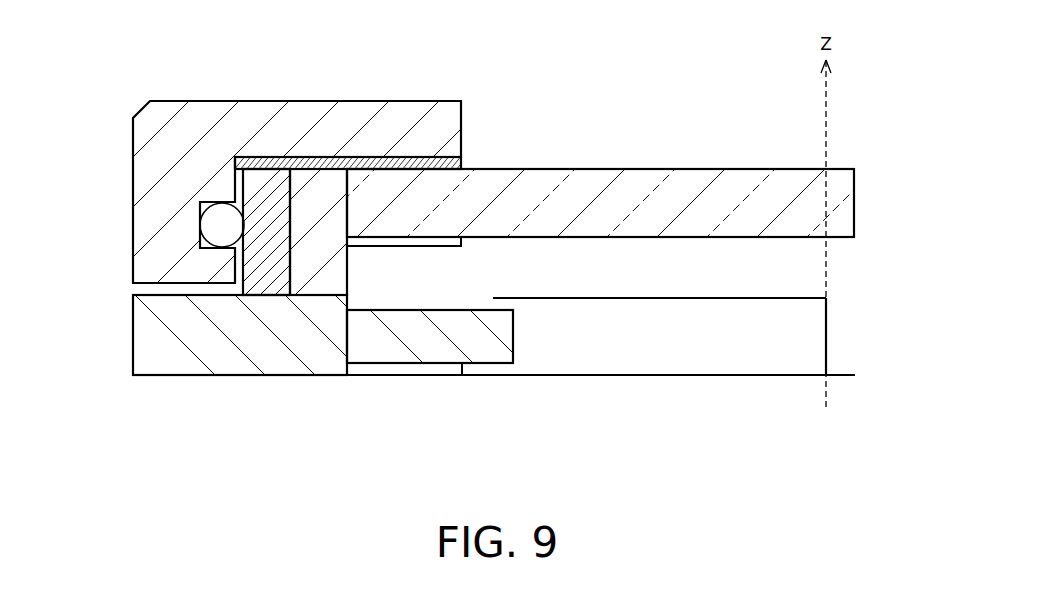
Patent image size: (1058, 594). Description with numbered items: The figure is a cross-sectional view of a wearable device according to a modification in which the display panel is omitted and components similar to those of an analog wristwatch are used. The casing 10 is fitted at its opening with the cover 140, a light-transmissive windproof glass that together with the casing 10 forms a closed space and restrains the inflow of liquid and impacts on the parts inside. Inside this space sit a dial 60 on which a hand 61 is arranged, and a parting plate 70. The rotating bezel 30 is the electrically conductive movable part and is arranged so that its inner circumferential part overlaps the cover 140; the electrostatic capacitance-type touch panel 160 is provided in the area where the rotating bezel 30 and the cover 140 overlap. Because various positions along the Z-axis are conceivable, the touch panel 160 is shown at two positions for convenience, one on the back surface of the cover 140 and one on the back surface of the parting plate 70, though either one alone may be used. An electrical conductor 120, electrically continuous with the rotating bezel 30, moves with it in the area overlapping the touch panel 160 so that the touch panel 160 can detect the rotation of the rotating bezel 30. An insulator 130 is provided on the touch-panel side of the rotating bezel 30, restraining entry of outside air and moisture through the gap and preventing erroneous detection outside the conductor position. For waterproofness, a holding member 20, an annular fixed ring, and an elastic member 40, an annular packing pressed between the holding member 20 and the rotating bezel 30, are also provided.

The casing 10 is at (240, 375).
The holding member 20 is at (270, 171).
The rotating bezel 30 is at (352, 101).
The elastic member 40 is at (200, 222).
The dial 60 is at (843, 372).
The hand 61 is at (690, 298).
The parting plate 70 is at (513, 335).
The electrical conductor 120 is at (400, 160).
The insulator 130 is at (300, 160).
The cover 140 is at (856, 186).
The touch panel 160 is at (410, 246).